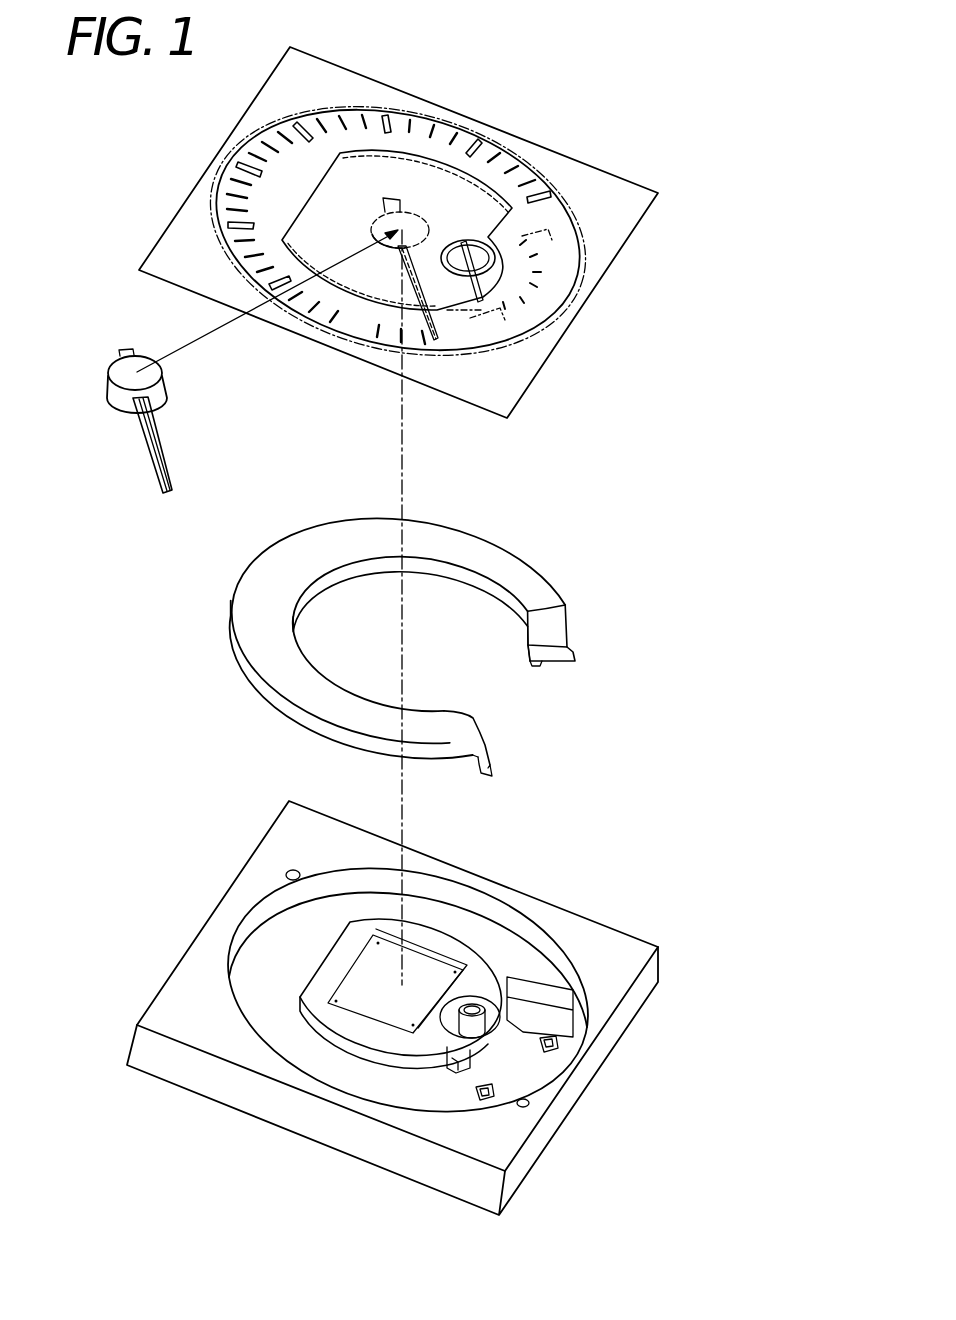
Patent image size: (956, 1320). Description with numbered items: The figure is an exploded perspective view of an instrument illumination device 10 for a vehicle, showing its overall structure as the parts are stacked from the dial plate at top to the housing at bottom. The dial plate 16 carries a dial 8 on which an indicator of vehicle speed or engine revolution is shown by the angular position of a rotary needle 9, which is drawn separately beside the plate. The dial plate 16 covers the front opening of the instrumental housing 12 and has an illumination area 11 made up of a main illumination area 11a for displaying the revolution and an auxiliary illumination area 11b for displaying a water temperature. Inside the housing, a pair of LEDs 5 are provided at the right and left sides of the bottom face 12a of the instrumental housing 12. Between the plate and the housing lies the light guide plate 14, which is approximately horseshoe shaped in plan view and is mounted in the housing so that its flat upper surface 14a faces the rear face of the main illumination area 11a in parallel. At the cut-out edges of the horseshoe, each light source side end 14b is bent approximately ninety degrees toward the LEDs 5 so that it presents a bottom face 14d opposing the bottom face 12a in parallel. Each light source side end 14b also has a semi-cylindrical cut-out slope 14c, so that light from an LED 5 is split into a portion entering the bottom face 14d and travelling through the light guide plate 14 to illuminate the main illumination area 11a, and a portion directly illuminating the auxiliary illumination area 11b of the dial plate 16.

The LED 5 is at (560, 1041).
The dial 8 is at (350, 330).
The rotary needle 9 is at (104, 356).
The instrument illumination device 10 is at (398, 244).
The illumination area 11 is at (417, 256).
The main illumination area 11a is at (396, 330).
The auxiliary illumination area 11b is at (540, 302).
The instrumental housing 12 is at (392, 1008).
The bottom face 12a is at (532, 1080).
The light guide plate 14 is at (445, 639).
The flat upper surface 14a is at (418, 536).
The light source side end 14b is at (560, 626).
The cut-out slope 14c is at (553, 665).
The bottom face 14d is at (542, 668).
The dial plate 16 is at (586, 190).